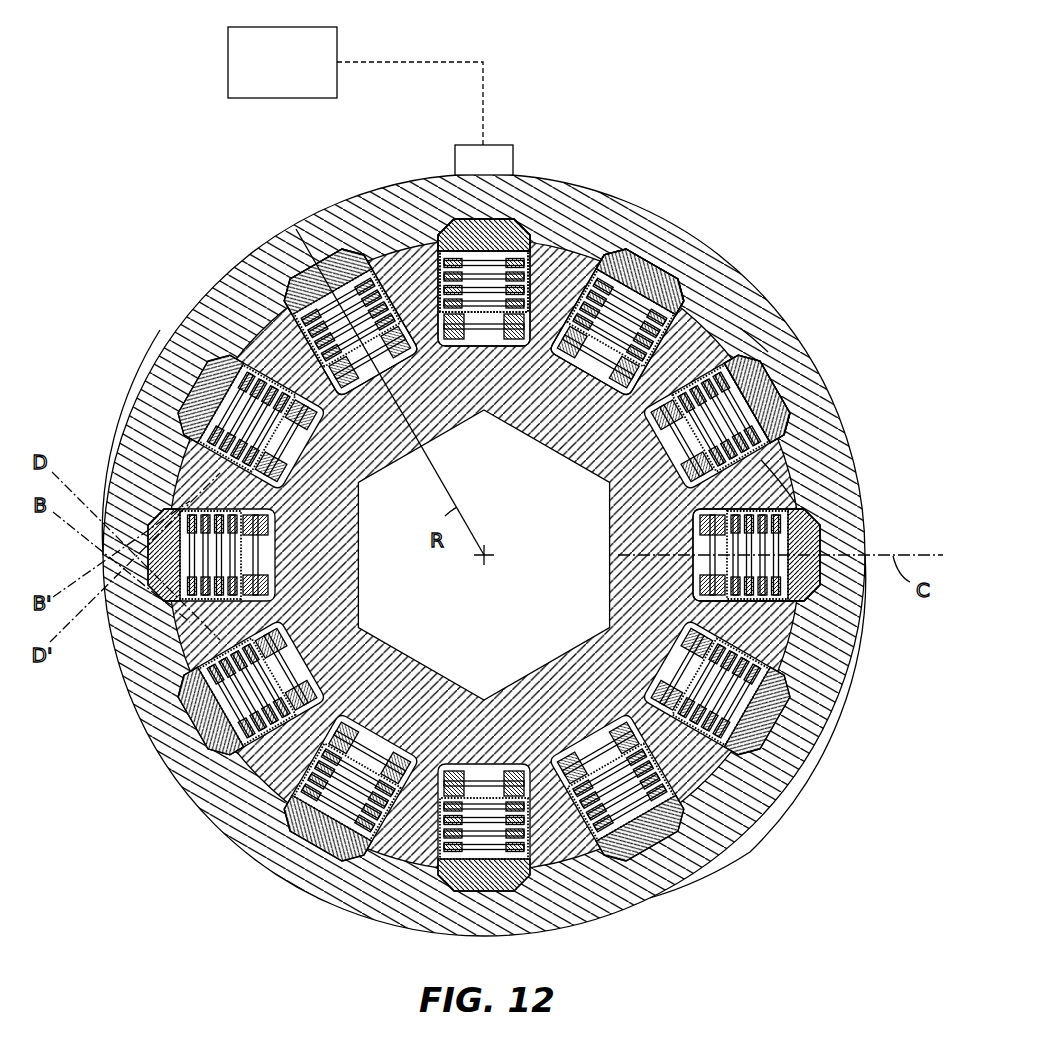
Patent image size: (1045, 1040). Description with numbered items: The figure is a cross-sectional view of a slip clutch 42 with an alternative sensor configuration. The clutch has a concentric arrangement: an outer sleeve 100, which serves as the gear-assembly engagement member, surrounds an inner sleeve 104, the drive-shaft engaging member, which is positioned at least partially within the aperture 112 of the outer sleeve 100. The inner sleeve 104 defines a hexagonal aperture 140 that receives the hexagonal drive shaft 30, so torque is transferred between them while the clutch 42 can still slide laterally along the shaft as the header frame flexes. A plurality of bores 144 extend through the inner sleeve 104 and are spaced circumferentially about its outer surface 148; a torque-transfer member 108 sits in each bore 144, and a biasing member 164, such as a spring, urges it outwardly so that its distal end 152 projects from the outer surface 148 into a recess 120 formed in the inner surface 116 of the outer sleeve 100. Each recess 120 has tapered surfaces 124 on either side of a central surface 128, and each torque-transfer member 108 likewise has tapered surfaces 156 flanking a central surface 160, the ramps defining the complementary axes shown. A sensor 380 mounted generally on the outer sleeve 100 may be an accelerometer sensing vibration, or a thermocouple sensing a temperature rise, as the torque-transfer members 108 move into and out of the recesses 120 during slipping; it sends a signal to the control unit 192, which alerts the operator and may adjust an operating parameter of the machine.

The drive shaft 30 is at (507, 602).
The slip clutch 42 is at (166, 158).
The outer sleeve 100 is at (713, 285).
The inner sleeve 104 is at (780, 480).
The torque-transfer member 108 is at (627, 253).
The aperture 112 is at (270, 308).
The inner surface 116 is at (752, 345).
The recess 120 is at (780, 383).
The tapered surface 124 is at (760, 356).
The central surface 128 is at (790, 400).
The aperture 140 is at (330, 212).
The bore 144 is at (845, 675).
The outer surface 148 is at (770, 798).
The distal end 152 is at (433, 212).
The tapered surface 156 is at (455, 215).
The central surface 160 is at (470, 217).
The biasing member 164 is at (653, 252).
The control unit 192 is at (355, 86).
The sensor 380 is at (500, 150).